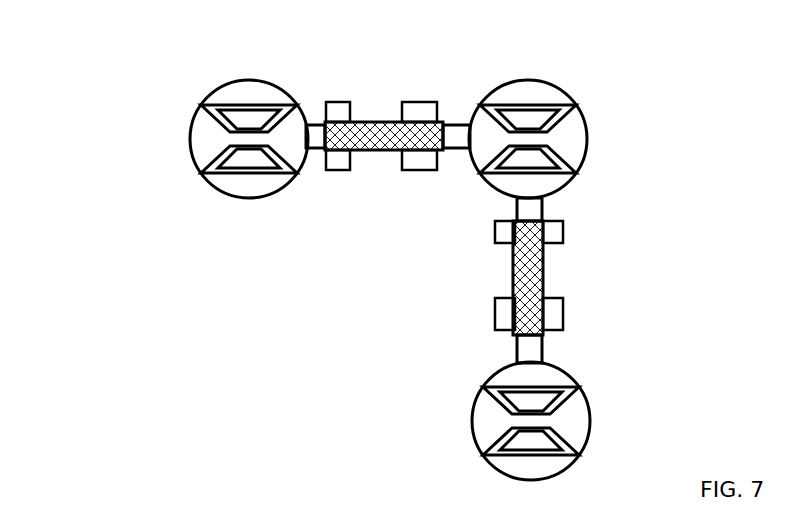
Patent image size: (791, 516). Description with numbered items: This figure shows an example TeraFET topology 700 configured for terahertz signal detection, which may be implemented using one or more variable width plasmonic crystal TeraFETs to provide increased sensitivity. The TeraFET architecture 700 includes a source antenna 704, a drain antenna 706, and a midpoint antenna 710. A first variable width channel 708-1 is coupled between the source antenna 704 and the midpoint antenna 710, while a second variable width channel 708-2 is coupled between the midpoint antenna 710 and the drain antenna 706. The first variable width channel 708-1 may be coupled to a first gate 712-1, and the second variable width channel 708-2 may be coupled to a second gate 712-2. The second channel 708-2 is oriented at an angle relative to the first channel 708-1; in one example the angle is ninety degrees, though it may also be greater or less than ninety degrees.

The TeraFET topology 700 is at (98, 54).
The source antenna 704 is at (190, 141).
The drain antenna 706 is at (591, 418).
The midpoint antenna 710 is at (588, 150).
The first variable width channel 708-1 is at (401, 110).
The second variable width channel 708-2 is at (504, 246).
The first gate 712-1 is at (380, 140).
The second gate 712-2 is at (530, 267).